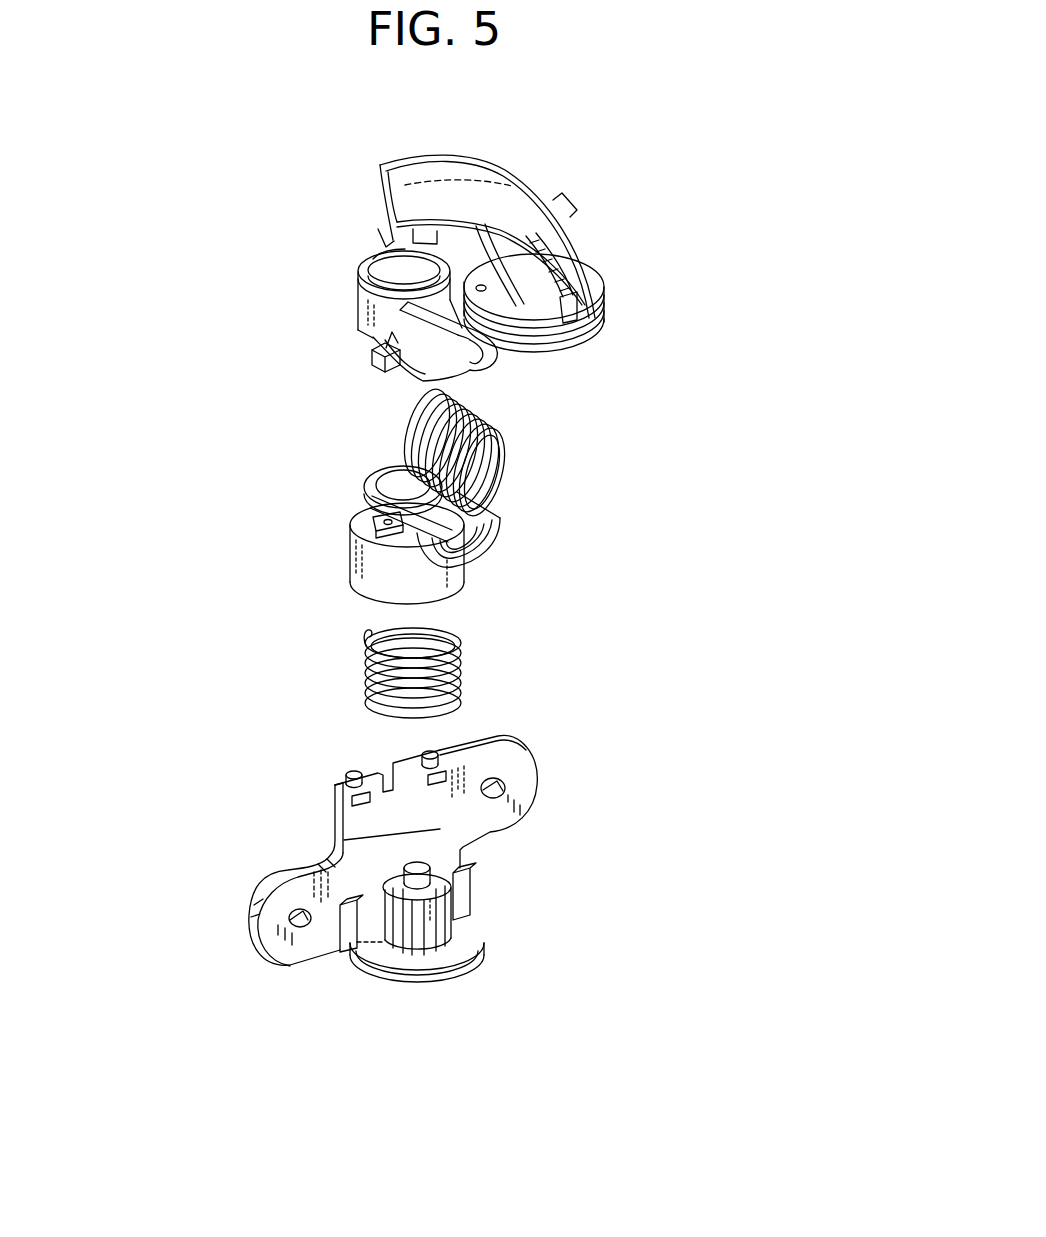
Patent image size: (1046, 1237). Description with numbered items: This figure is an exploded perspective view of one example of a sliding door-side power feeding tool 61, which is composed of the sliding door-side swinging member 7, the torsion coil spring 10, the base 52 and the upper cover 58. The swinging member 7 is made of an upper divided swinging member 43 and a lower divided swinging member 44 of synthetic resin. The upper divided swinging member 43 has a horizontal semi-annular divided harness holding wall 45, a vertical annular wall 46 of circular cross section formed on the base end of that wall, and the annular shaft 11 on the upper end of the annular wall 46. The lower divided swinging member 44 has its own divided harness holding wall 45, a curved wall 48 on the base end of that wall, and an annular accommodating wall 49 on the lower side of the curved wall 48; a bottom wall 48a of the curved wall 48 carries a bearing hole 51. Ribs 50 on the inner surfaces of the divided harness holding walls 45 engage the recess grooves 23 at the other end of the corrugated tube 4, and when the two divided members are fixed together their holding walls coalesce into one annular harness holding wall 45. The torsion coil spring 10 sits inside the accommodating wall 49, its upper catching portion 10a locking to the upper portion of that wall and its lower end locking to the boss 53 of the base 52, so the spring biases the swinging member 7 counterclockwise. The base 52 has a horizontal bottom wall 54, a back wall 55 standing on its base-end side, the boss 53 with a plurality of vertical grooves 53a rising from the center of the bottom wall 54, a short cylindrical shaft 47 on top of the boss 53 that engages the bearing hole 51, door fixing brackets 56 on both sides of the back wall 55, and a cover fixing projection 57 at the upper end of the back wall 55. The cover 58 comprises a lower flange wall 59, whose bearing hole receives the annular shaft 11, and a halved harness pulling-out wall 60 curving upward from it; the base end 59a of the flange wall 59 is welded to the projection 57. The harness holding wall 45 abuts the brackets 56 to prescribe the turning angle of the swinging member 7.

The corrugated tube 4 is at (517, 453).
The sliding door-side swinging member 7 is at (243, 312).
The torsion coil spring 10 is at (467, 676).
The catching portion 10a is at (366, 634).
The annular shaft 11 is at (378, 251).
The recess grooves 23 is at (468, 405).
The upper divided swinging member 43 is at (344, 322).
The lower divided swinging member 44 is at (352, 469).
The divided harness holding wall 45 is at (420, 348).
The annular wall 46 is at (363, 300).
The short cylindrical shaft 47 is at (428, 869).
The curved wall 48 is at (366, 481).
The bottom wall 48a is at (398, 490).
The annular accommodating wall 49 is at (363, 552).
The ribs 50 is at (473, 538).
The bearing hole 51 is at (400, 490).
The base 52 is at (515, 868).
The boss 53 is at (447, 906).
The vertical grooves 53a is at (430, 924).
The bottom wall 54 is at (473, 968).
The back wall 55 is at (333, 801).
The door fixing brackets 56 is at (537, 770).
The cover fixing projection 57 is at (348, 769).
The upper cover 58 is at (610, 253).
The lower flange wall 59 is at (604, 298).
The base end 59a is at (585, 261).
The halved harness pulling-out wall 60 is at (529, 178).
The sliding door-side power feeding tool 61 is at (782, 496).